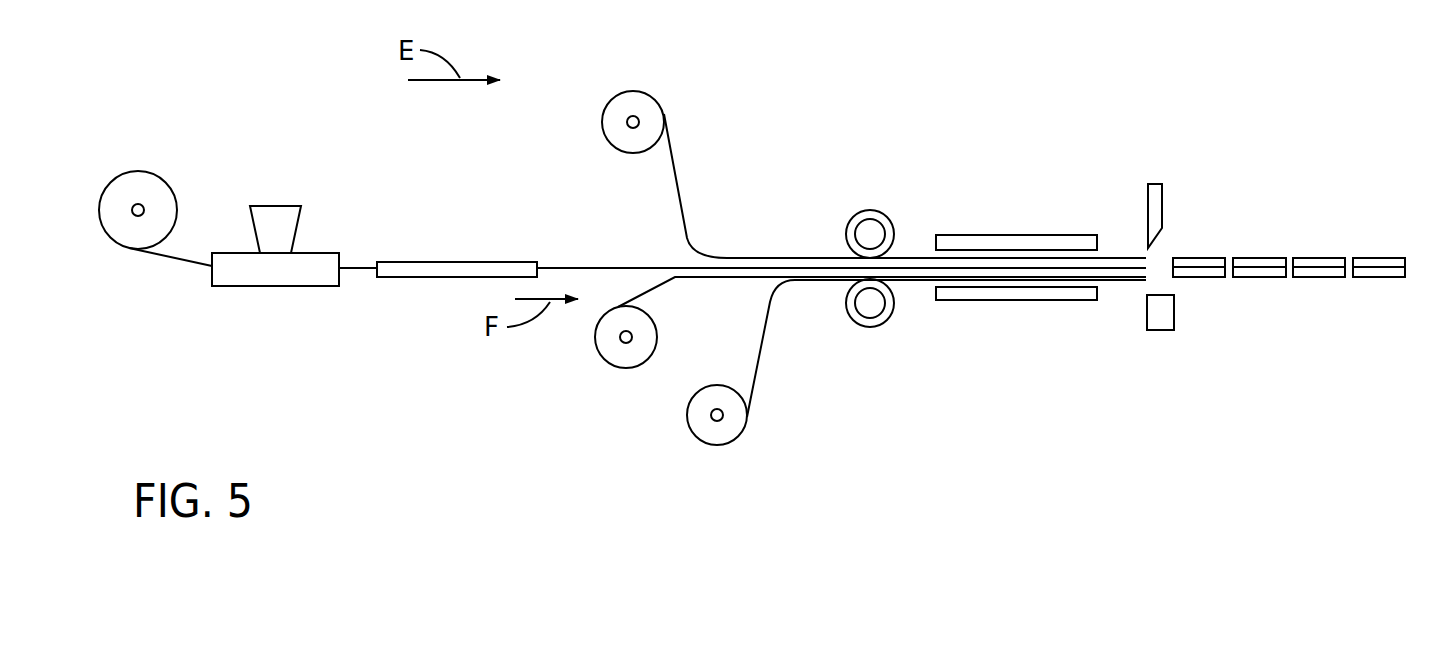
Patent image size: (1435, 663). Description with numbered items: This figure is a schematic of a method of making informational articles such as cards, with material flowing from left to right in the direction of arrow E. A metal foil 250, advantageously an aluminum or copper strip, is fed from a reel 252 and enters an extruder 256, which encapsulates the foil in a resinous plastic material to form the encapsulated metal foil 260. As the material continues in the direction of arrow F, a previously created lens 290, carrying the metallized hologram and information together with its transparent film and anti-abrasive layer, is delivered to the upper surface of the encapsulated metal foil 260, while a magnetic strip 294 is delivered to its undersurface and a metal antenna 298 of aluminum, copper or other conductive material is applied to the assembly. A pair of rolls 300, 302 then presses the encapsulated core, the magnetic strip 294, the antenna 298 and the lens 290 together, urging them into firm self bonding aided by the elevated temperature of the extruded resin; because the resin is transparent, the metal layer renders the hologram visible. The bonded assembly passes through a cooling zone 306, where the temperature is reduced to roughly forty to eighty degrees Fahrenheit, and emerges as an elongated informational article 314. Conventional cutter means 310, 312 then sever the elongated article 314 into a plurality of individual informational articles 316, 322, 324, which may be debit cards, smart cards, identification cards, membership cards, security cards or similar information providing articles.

The metal foil 250 is at (128, 247).
The reel 252 is at (175, 192).
The extruder 256 is at (283, 289).
The encapsulated metal foil 260 is at (452, 260).
The lens 290 is at (665, 107).
The magnetic strip 294 is at (602, 360).
The metal antenna 298 is at (695, 443).
The roll 300 is at (882, 213).
The roll 302 is at (875, 327).
The cooling zone 306 is at (1026, 232).
The elongated informational article 314 is at (1135, 278).
The cutter means 310 is at (1162, 207).
The cutter means 312 is at (1152, 330).
The individual informational article 316 is at (1188, 277).
The individual informational article 322 is at (1258, 277).
The individual informational article 324 is at (1333, 277).